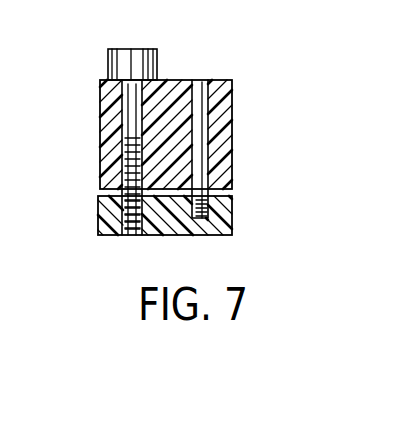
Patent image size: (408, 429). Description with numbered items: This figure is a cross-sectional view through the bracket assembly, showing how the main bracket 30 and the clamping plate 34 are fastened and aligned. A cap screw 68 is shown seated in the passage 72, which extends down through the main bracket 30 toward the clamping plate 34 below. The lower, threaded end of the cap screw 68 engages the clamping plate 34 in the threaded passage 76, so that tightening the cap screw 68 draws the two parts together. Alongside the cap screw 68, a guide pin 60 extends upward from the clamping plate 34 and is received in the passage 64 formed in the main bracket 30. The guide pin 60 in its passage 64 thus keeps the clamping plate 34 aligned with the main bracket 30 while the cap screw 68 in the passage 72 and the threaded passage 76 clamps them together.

The main bracket 30 is at (220, 167).
The clamping plate 34 is at (225, 222).
The guide pin 60 is at (197, 92).
The passage 64 is at (203, 137).
The cap screw 68 is at (141, 50).
The passage 72 is at (122, 137).
The threaded passage 76 is at (136, 224).